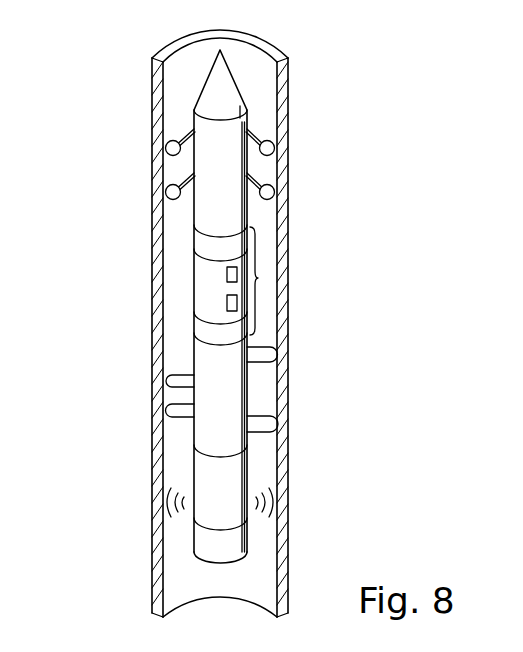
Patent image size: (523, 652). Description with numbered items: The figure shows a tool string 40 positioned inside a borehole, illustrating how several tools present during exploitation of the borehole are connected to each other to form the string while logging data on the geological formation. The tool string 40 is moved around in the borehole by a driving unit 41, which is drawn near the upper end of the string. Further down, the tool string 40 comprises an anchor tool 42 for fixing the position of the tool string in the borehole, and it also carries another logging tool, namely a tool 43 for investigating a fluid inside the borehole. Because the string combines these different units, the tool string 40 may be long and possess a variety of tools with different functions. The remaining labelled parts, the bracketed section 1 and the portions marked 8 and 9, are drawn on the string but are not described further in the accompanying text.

The measuring unit 1 is at (259, 280).
The coupling section 8 is at (200, 240).
The sensor section 9 is at (202, 287).
The tool string 40 is at (181, 270).
The driving unit 41 is at (218, 198).
The anchor tool 42 is at (220, 408).
The tool for investigating a fluid 43 is at (220, 490).